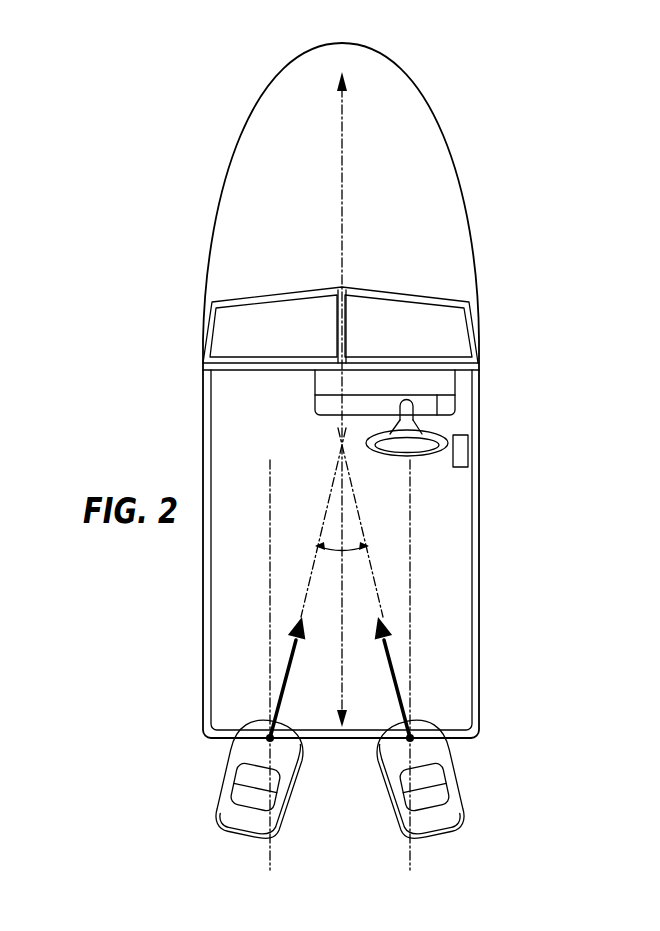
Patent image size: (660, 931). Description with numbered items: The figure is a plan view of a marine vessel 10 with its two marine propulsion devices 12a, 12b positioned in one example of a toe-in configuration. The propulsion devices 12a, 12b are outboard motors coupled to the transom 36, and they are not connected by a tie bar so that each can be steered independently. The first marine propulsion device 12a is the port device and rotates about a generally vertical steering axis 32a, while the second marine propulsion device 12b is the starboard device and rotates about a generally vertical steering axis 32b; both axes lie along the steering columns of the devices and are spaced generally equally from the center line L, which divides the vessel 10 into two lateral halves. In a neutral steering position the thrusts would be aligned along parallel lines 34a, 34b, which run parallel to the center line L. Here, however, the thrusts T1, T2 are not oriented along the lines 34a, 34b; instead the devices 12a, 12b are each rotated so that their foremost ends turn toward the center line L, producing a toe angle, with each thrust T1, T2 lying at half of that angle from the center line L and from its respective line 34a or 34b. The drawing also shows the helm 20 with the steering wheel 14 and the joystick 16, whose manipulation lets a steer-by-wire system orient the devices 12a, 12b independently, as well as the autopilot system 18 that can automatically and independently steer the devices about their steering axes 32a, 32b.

The marine vessel 10 is at (466, 204).
The first marine propulsion device 12a is at (233, 833).
The second marine propulsion device 12b is at (447, 833).
The steering wheel 14 is at (406, 452).
The joystick 16 is at (468, 450).
The autopilot system 18 is at (455, 408).
The helm 20 is at (462, 423).
The steering axis 32a is at (265, 743).
The steering axis 32b is at (415, 743).
The parallel line 34a is at (270, 618).
The parallel line 34b is at (410, 618).
The transom 36 is at (333, 740).
The center line L is at (344, 162).
The thrust T1 is at (291, 653).
The thrust T2 is at (389, 653).